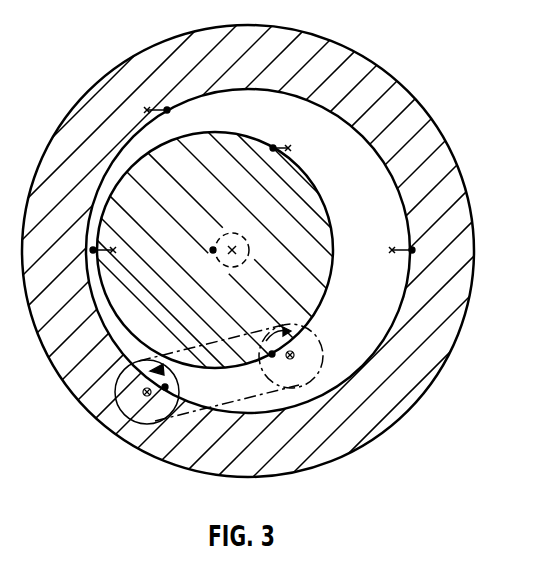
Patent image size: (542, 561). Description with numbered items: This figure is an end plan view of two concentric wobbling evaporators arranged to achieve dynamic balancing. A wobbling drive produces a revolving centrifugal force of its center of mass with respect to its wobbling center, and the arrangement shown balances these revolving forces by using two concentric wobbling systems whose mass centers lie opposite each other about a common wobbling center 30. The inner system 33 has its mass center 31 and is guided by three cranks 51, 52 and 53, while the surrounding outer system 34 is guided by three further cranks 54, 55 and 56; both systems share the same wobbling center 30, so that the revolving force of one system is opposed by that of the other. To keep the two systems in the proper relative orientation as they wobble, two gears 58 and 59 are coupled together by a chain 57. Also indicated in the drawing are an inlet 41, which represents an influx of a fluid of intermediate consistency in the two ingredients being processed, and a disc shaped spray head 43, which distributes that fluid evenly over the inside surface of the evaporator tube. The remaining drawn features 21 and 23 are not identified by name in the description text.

The roller shaft 21 is at (294, 355).
The pivot point 23 is at (271, 357).
The common wobbling center 30 is at (233, 247).
The mass center of the inner system 31 is at (211, 252).
The inner system 33 is at (320, 193).
The outer system 34 is at (442, 130).
The inlet 41 is at (143, 394).
The spray head 43 is at (166, 390).
The crank 51 is at (282, 361).
The crank 52 is at (112, 247).
The crank 53 is at (278, 146).
The crank 54 is at (157, 397).
The crank 55 is at (161, 107).
The crank 56 is at (402, 247).
The chain 57 is at (222, 330).
The gear 58 is at (120, 378).
The gear 59 is at (316, 333).